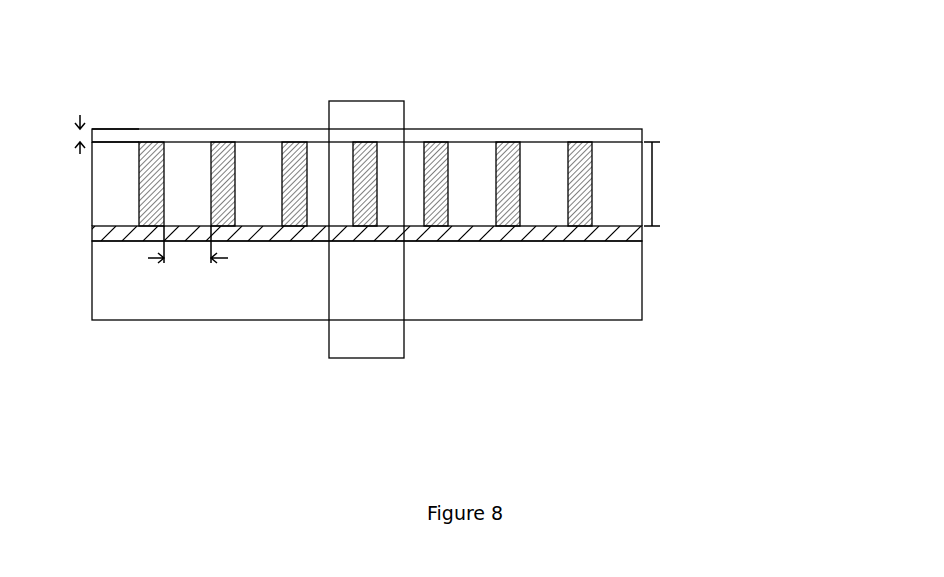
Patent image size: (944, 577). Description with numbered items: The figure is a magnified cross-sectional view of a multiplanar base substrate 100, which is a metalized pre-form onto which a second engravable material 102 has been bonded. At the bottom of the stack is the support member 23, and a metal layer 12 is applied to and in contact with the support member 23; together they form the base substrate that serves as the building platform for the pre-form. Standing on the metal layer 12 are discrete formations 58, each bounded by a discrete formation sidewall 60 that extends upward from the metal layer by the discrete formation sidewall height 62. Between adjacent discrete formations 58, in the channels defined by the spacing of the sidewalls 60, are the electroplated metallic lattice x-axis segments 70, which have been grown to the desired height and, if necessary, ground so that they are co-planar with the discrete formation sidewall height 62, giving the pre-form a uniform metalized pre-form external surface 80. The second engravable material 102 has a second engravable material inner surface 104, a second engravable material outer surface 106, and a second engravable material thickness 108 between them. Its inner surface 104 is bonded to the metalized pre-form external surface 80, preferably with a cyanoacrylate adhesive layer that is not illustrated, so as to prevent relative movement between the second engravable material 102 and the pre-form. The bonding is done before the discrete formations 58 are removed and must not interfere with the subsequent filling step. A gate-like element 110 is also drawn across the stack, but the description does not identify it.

The multiplanar base substrate 100 is at (704, 79).
The support member 23 is at (622, 295).
The metal layer 12 is at (633, 229).
The second engravable material 102 is at (610, 128).
The metallic lattice x-axis segments 70 is at (508, 148).
The metalized pre-form external surface 80 is at (252, 142).
The gate structure 110 is at (378, 358).
The discrete formation 58 is at (632, 194).
The discrete formation sidewall height 62 is at (668, 184).
The discrete formation sidewall 60 is at (188, 263).
The second engravable material thickness 108 is at (52, 134).
The second engravable material outer surface 106 is at (125, 128).
The second engravable material inner surface 104 is at (117, 142).